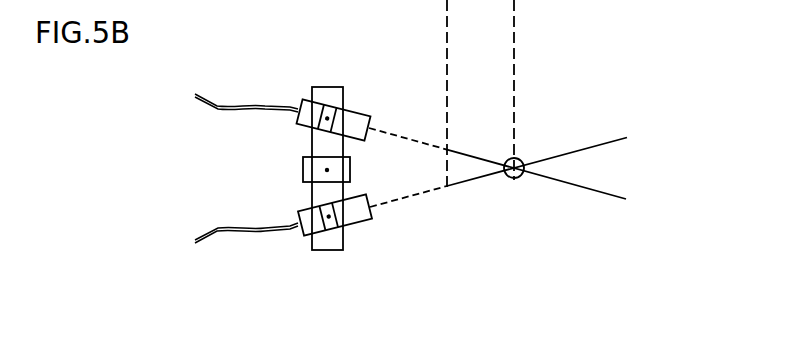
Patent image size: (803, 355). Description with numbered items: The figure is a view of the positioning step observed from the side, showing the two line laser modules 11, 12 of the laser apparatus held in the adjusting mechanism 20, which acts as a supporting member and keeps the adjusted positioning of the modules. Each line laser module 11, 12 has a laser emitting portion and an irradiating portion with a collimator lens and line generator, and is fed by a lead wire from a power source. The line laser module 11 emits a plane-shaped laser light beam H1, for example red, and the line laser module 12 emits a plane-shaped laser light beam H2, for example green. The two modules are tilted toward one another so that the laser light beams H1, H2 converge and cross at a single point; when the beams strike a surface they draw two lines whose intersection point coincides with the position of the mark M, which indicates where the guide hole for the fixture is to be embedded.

The adjusting mechanism 20 is at (300, 190).
The line laser module 12 is at (362, 112).
The line laser module 11 is at (361, 222).
The mark M is at (514, 178).
The laser light beam H1 is at (598, 145).
The laser light beam H2 is at (598, 193).